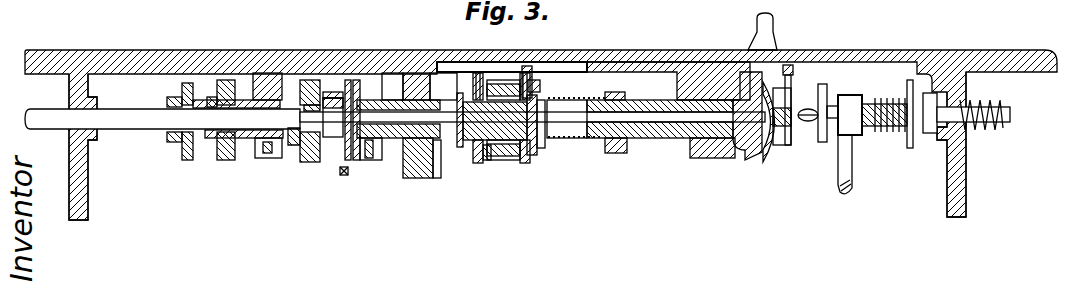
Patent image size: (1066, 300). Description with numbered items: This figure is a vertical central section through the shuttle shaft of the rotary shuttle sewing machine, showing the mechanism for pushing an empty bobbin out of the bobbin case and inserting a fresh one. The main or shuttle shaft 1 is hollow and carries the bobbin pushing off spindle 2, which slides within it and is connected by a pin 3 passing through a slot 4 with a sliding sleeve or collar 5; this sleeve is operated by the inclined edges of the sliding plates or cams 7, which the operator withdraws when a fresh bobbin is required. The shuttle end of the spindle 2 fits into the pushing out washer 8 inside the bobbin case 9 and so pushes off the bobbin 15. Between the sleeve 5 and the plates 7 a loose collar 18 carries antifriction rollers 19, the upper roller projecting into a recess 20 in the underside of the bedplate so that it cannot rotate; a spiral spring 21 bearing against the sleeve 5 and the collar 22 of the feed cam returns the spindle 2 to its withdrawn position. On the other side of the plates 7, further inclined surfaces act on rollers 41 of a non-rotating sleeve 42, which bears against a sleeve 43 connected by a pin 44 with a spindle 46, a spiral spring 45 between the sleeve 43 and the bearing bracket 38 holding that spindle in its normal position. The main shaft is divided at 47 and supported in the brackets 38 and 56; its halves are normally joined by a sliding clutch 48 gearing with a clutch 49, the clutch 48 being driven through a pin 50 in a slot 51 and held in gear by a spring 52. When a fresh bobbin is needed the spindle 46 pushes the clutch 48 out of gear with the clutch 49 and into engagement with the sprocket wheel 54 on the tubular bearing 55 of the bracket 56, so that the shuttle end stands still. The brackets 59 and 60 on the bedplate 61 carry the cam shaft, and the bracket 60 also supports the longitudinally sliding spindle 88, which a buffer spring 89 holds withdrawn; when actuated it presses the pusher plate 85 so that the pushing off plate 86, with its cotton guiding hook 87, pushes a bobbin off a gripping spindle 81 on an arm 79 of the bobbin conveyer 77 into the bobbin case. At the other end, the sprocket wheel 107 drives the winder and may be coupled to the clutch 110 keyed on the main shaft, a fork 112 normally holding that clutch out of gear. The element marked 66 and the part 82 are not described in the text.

The main or shuttle shaft 1 is at (134, 109).
The bobbin pushing off shaft or spindle 2 is at (648, 122).
The pin 3 is at (555, 138).
The slot 4 is at (583, 138).
The sliding sleeve or collar 5 is at (541, 148).
The sliding plates or cams 7 is at (500, 80).
The pushing out washer 8 is at (752, 152).
The bobbin case 9 is at (785, 145).
The bobbin 15 is at (791, 100).
The loose collar or sleeve 18 is at (540, 88).
The antifriction rollers 19 is at (538, 66).
The slot or recess 20 is at (495, 62).
The spiral spring 21 is at (562, 97).
The collar of the feed cam 22 is at (625, 96).
The bearing bracket 38 is at (410, 178).
The anti-friction rollers 41 is at (472, 73).
The sleeve or collar 42 is at (485, 162).
The sleeve 43 is at (458, 140).
The pin 44 is at (455, 100).
The spiral spring 45 is at (433, 178).
The shaft or spindle 46 is at (393, 138).
The division of the main shaft 47 is at (349, 80).
The sliding clutch 48 is at (357, 160).
The clutch 49 is at (388, 73).
The pin 50 is at (333, 92).
The slot 51 is at (318, 104).
The spring 52 is at (327, 98).
The sprocket wheel 54 is at (313, 162).
The tubular bearing 55 is at (291, 145).
The bracket 56 is at (265, 158).
The bracket 59 is at (80, 168).
The bracket 60 is at (967, 187).
The bedplate 61 is at (146, 75).
The key 66 is at (344, 175).
The bobbin conveyer 77 is at (852, 172).
The radial arm of the bobbin conveyer 79 is at (530, 155).
The split spring gripping spindle 81 is at (810, 121).
The threaded rod 82 is at (877, 104).
The pusher plate 85 is at (910, 148).
The pushing off plate 86 is at (845, 135).
The cotton guiding hook 87 is at (823, 84).
The longitudinally sliding spindle 88 is at (1002, 120).
The buffer spring 89 is at (984, 101).
The sprocket wheel 107 is at (230, 160).
The clutch 110 is at (187, 160).
The fork 112 is at (172, 142).